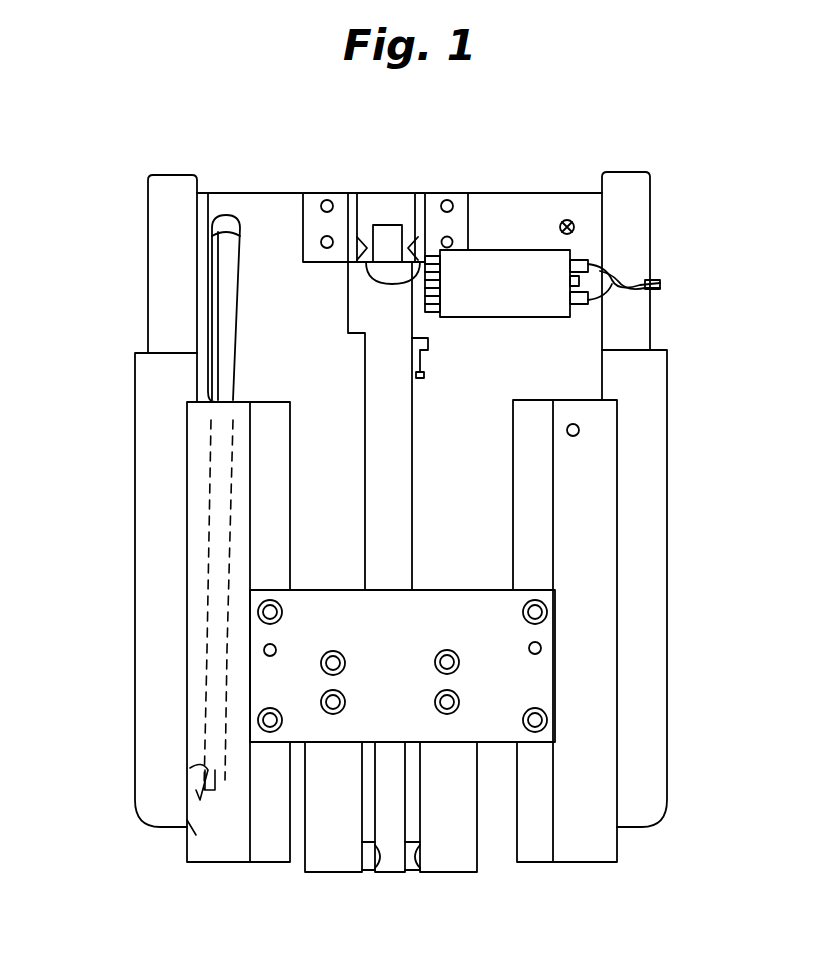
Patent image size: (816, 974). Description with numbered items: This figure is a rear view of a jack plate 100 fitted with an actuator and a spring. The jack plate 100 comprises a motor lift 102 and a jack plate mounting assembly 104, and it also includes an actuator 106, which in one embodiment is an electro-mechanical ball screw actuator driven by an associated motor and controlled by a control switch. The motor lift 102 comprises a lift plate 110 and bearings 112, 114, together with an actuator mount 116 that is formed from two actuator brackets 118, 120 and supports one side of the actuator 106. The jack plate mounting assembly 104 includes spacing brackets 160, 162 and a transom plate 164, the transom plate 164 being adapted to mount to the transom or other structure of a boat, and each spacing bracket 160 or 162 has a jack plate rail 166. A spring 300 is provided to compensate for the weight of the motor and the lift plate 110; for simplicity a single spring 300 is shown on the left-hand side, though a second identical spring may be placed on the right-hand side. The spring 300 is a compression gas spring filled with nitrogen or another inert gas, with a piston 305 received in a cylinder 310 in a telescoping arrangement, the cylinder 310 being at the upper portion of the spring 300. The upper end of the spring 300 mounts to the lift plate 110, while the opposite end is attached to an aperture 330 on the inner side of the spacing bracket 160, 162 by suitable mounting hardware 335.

The jack plate 100 is at (648, 72).
The motor lift 102 is at (258, 150).
The jack plate mounting assembly 104 is at (110, 742).
The actuator 106 is at (392, 420).
The lift plate 110 is at (513, 205).
The bearing 112 is at (160, 222).
The bearing 114 is at (634, 212).
The actuator mount 116 is at (343, 163).
The actuator bracket 118 is at (308, 210).
The actuator bracket 120 is at (458, 200).
The spacing bracket 160 is at (590, 757).
The spacing bracket 162 is at (152, 689).
The transom plate 164 is at (500, 724).
The jack plate rail 166 is at (165, 418).
The spring 300 is at (222, 298).
The piston 305 is at (215, 548).
The cylinder 310 is at (205, 656).
The aperture 330 is at (188, 783).
The mounting hardware 335 is at (180, 835).